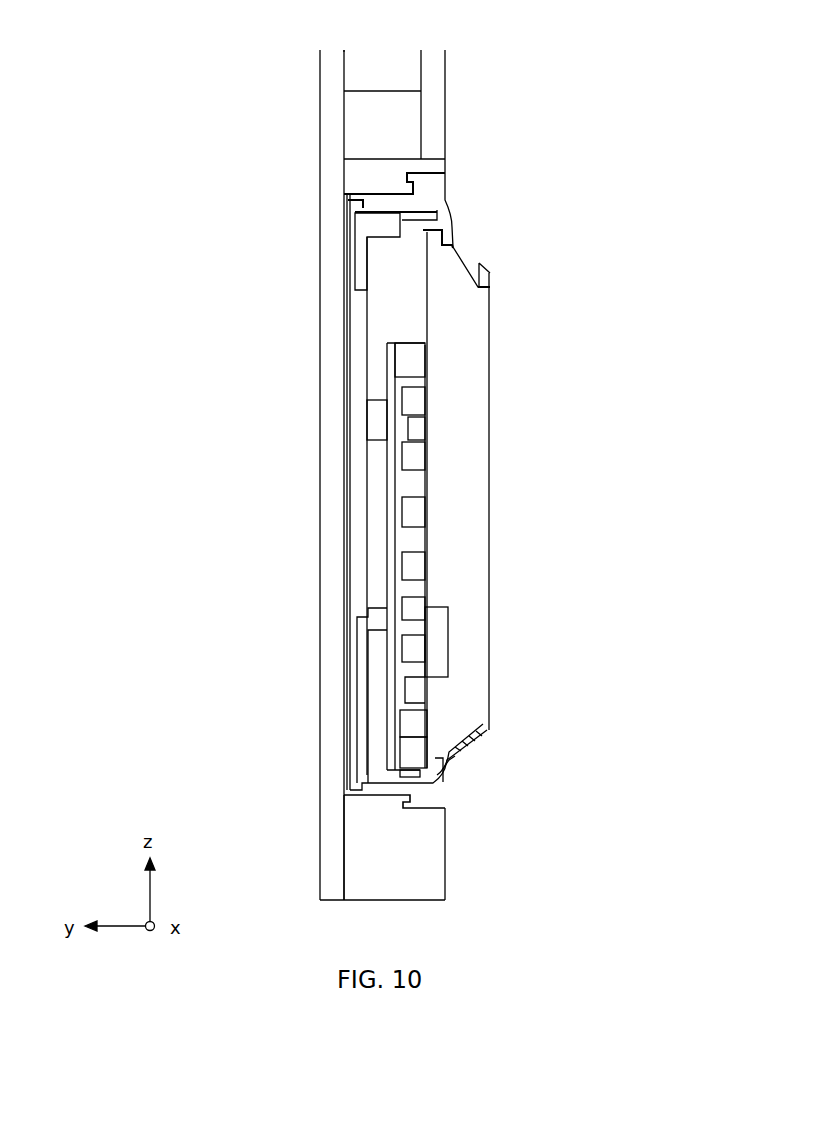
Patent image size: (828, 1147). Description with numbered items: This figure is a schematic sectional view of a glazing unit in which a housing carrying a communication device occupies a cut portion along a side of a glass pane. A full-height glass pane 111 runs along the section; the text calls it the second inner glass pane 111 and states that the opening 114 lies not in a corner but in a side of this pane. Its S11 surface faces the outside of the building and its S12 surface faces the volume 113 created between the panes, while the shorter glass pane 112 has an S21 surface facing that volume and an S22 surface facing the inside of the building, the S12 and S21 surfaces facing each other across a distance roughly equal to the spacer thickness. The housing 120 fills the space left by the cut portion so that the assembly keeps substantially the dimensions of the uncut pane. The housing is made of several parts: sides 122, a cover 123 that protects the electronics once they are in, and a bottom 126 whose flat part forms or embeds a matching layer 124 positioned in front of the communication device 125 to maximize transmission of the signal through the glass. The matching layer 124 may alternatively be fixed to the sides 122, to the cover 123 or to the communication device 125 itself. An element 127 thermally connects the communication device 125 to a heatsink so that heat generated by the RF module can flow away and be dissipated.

The second inner glass pane 111 is at (325, 458).
The second tube 112 is at (465, 155).
The space between tubes 113 is at (385, 137).
The opening 114 is at (373, 63).
The S11 surface S11 is at (320, 188).
The S12 surface S12 is at (344, 55).
The S21 surface S21 is at (421, 58).
The S22 surface S22 is at (447, 85).
The sensor unit 120 is at (590, 506).
The sides of the housing 122 is at (417, 845).
The cover of the housing 123 is at (435, 795).
The matching layer 124 is at (360, 377).
The communication device 125 is at (395, 517).
The bottom of the housing 126 is at (355, 253).
The connector 127 is at (413, 648).